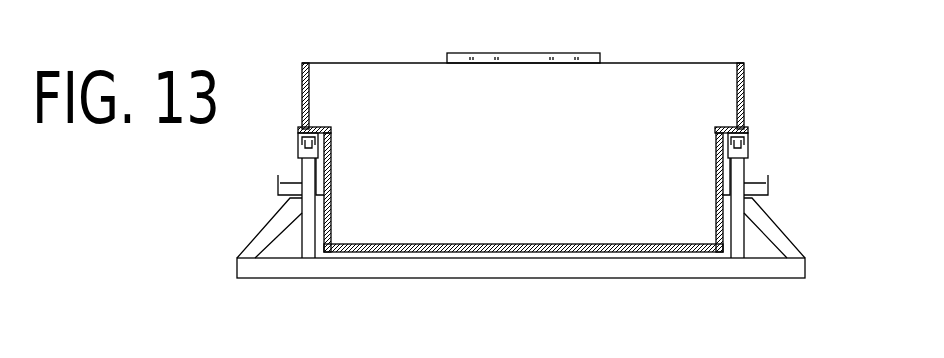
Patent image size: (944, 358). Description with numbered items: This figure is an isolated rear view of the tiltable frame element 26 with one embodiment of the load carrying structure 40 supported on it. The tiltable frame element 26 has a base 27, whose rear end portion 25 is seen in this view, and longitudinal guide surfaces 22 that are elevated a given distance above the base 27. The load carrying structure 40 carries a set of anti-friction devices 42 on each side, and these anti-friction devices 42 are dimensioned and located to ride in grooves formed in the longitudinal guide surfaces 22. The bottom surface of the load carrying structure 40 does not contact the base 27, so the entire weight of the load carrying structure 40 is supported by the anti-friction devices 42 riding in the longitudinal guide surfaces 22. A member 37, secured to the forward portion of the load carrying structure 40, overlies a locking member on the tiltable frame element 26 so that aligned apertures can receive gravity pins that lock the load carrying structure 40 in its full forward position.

The load carrying structure 40 is at (654, 62).
The member 37 is at (513, 63).
The anti-friction devices 42 is at (298, 138).
The longitudinal guide surfaces 22 is at (300, 152).
The tiltable frame element 26 is at (277, 207).
The rear end portion 25 is at (420, 265).
The base 27 is at (668, 253).